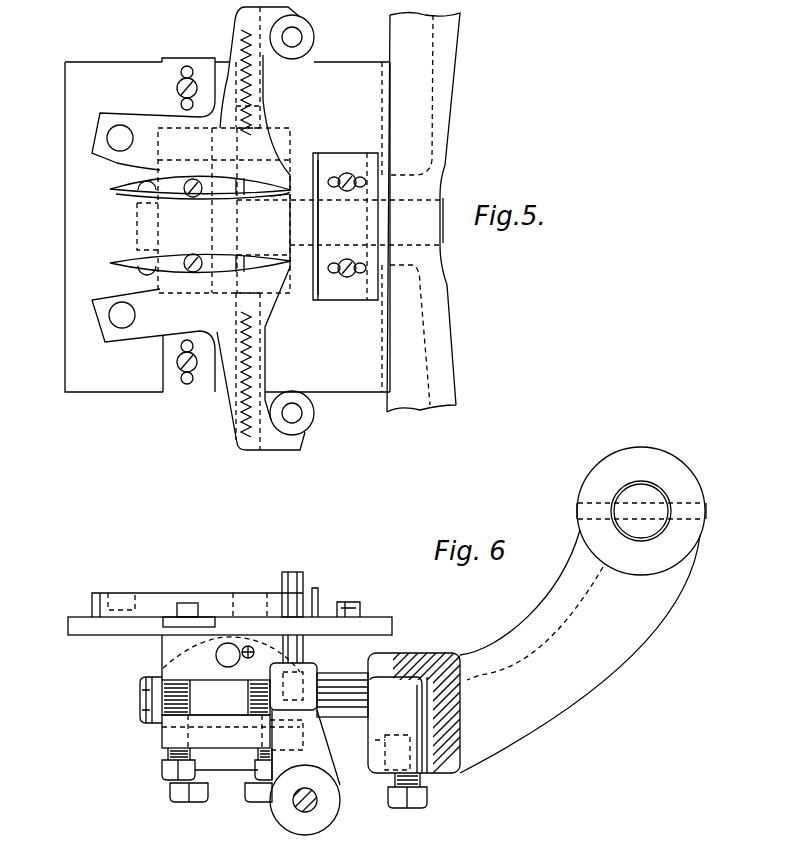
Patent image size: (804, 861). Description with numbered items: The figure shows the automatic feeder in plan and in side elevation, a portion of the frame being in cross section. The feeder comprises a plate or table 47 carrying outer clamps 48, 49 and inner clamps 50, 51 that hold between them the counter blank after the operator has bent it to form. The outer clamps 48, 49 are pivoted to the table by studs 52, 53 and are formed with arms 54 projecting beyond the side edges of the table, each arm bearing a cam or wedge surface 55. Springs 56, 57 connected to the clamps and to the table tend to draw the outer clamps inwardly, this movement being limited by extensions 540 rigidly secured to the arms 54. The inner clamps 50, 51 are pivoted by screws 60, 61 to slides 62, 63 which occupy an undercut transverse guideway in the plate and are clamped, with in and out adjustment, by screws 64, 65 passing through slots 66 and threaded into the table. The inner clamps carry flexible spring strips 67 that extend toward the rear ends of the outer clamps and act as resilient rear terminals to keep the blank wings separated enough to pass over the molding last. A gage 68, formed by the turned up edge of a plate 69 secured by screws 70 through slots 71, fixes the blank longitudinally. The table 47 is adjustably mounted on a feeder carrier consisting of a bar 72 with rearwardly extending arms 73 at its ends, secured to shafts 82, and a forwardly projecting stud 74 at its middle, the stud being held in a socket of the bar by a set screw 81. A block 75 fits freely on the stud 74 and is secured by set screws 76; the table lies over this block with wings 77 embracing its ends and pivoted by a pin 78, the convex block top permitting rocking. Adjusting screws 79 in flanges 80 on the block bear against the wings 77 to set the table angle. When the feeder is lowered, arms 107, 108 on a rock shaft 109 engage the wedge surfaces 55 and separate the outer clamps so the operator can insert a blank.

In FIG. 5, the plate or table 47 is at (102, 388).
In FIG. 6, the plate or table 47 is at (82, 627).
In FIG. 5, the outer clamp 48 is at (178, 122).
In FIG. 5, the outer clamp 49 is at (172, 332).
In FIG. 6, the outer clamp 49 is at (150, 597).
In FIG. 5, the inner clamp 50 is at (172, 186).
In FIG. 5, the inner clamp 51 is at (223, 267).
In FIG. 5, the stud 52 is at (115, 136).
In FIG. 5, the stud 53 is at (122, 320).
In FIG. 6, the stud 53 is at (121, 597).
In FIG. 5, the arm 54 is at (240, 28).
In FIG. 6, the arm 54 is at (262, 597).
In FIG. 5, the cam or wedge surface 55 is at (300, 20).
In FIG. 5, the spring 56 is at (265, 92).
In FIG. 5, the spring 57 is at (268, 362).
In FIG. 6, the spring 57 is at (248, 660).
In FIG. 5, the screw 60 is at (195, 197).
In FIG. 5, the screw 61 is at (193, 272).
In FIG. 5, the slide 62 is at (170, 75).
In FIG. 5, the slide 63 is at (172, 385).
In FIG. 6, the slide 63 is at (205, 620).
In FIG. 5, the screw 64 is at (187, 67).
In FIG. 5, the screw 65 is at (186, 384).
In FIG. 6, the screw 65 is at (188, 603).
In FIG. 5, the slot 66 is at (198, 95).
In FIG. 5, the flexible spring strip 67 is at (277, 197).
In FIG. 5, the gage 68 is at (317, 290).
In FIG. 6, the gage 68 is at (318, 592).
In FIG. 5, the plate 69 is at (340, 295).
In FIG. 5, the screw 70 is at (347, 192).
In FIG. 5, the slot 71 is at (336, 192).
In FIG. 5, the bar 72 is at (445, 395).
In FIG. 6, the bar 72 is at (425, 653).
In FIG. 6, the arm 73 is at (565, 590).
In FIG. 5, the stud 74 is at (440, 225).
In FIG. 6, the stud 74 is at (150, 702).
In FIG. 6, the block 75 is at (222, 757).
In FIG. 6, the set screw 76 is at (250, 800).
In FIG. 6, the wing 77 is at (172, 648).
In FIG. 6, the pin 78 is at (228, 667).
In FIG. 6, the adjusting screw 79 is at (160, 770).
In FIG. 6, the flange 80 is at (172, 738).
In FIG. 6, the set screw 81 is at (415, 800).
In FIG. 6, the shaft 82 is at (648, 500).
In FIG. 5, the arm 107 is at (295, 37).
In FIG. 5, the arm 108 is at (295, 413).
In FIG. 6, the arm 108 is at (300, 583).
In FIG. 6, the rock shaft 109 is at (305, 812).
In FIG. 5, the extension 540 is at (266, 106).
In FIG. 6, the extension 540 is at (300, 628).